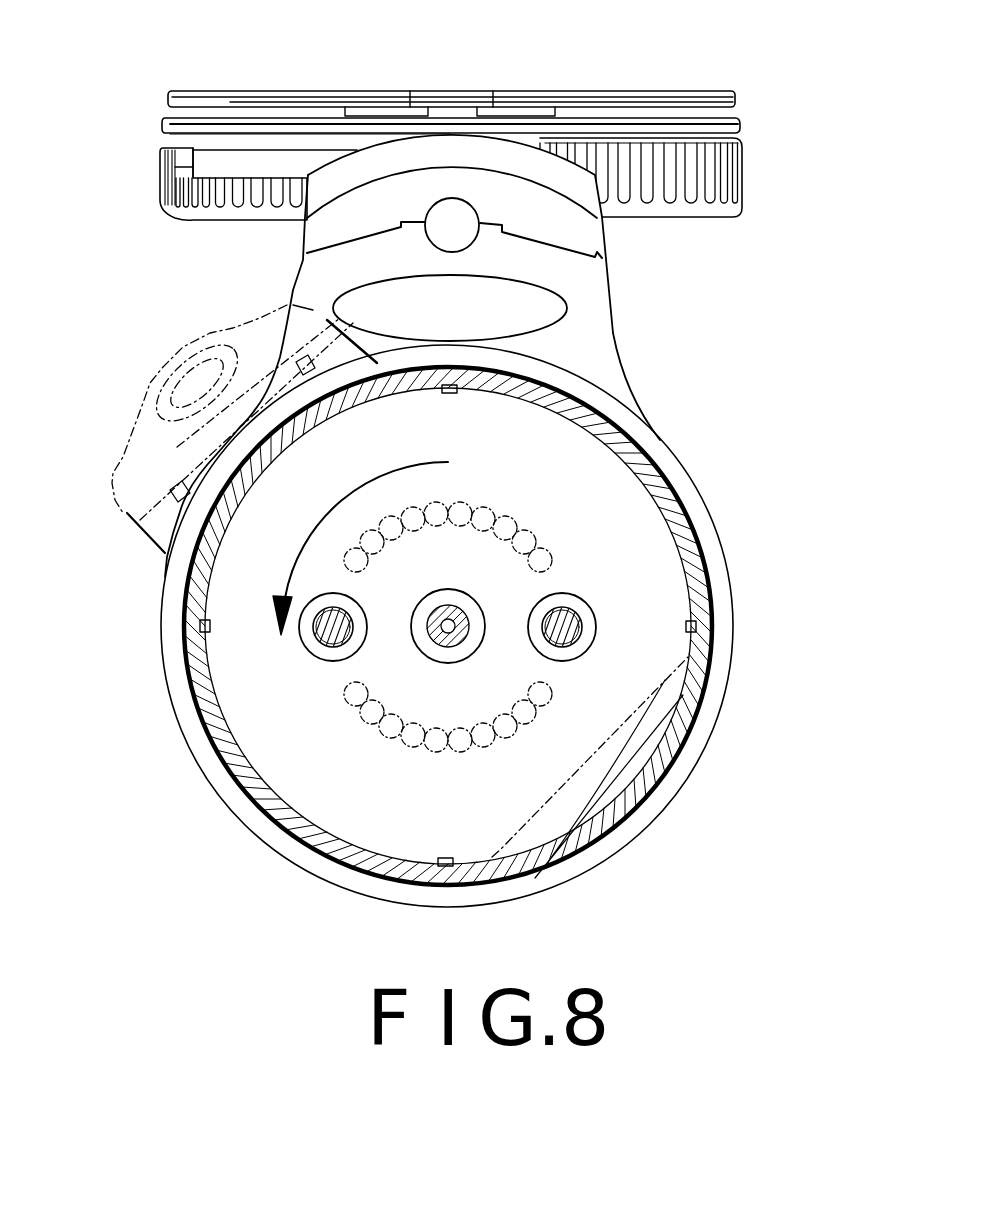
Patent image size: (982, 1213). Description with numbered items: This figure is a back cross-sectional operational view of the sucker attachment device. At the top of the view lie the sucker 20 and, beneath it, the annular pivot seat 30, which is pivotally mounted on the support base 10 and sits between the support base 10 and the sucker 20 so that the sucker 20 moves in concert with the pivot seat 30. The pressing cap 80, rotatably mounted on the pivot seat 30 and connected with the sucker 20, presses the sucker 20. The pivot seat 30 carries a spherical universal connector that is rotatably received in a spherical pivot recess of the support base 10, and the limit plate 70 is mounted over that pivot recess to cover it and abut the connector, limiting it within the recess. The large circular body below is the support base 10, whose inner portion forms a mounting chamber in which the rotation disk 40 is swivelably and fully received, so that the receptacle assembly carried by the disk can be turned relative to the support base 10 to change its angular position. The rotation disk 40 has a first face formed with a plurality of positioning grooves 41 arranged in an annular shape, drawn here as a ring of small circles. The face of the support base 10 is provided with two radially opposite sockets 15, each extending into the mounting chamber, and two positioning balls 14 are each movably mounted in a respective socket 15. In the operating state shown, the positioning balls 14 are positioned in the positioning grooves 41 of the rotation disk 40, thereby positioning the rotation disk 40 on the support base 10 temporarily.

The support base 10 is at (287, 847).
The positioning balls 14 is at (566, 612).
The sockets 15 is at (590, 637).
The sucker 20 is at (449, 88).
The pivot seat 30 is at (183, 148).
The rotation disk 40 is at (228, 748).
The positioning grooves 41 is at (533, 540).
The limit plate 70 is at (583, 233).
The pressing cap 80 is at (195, 212).